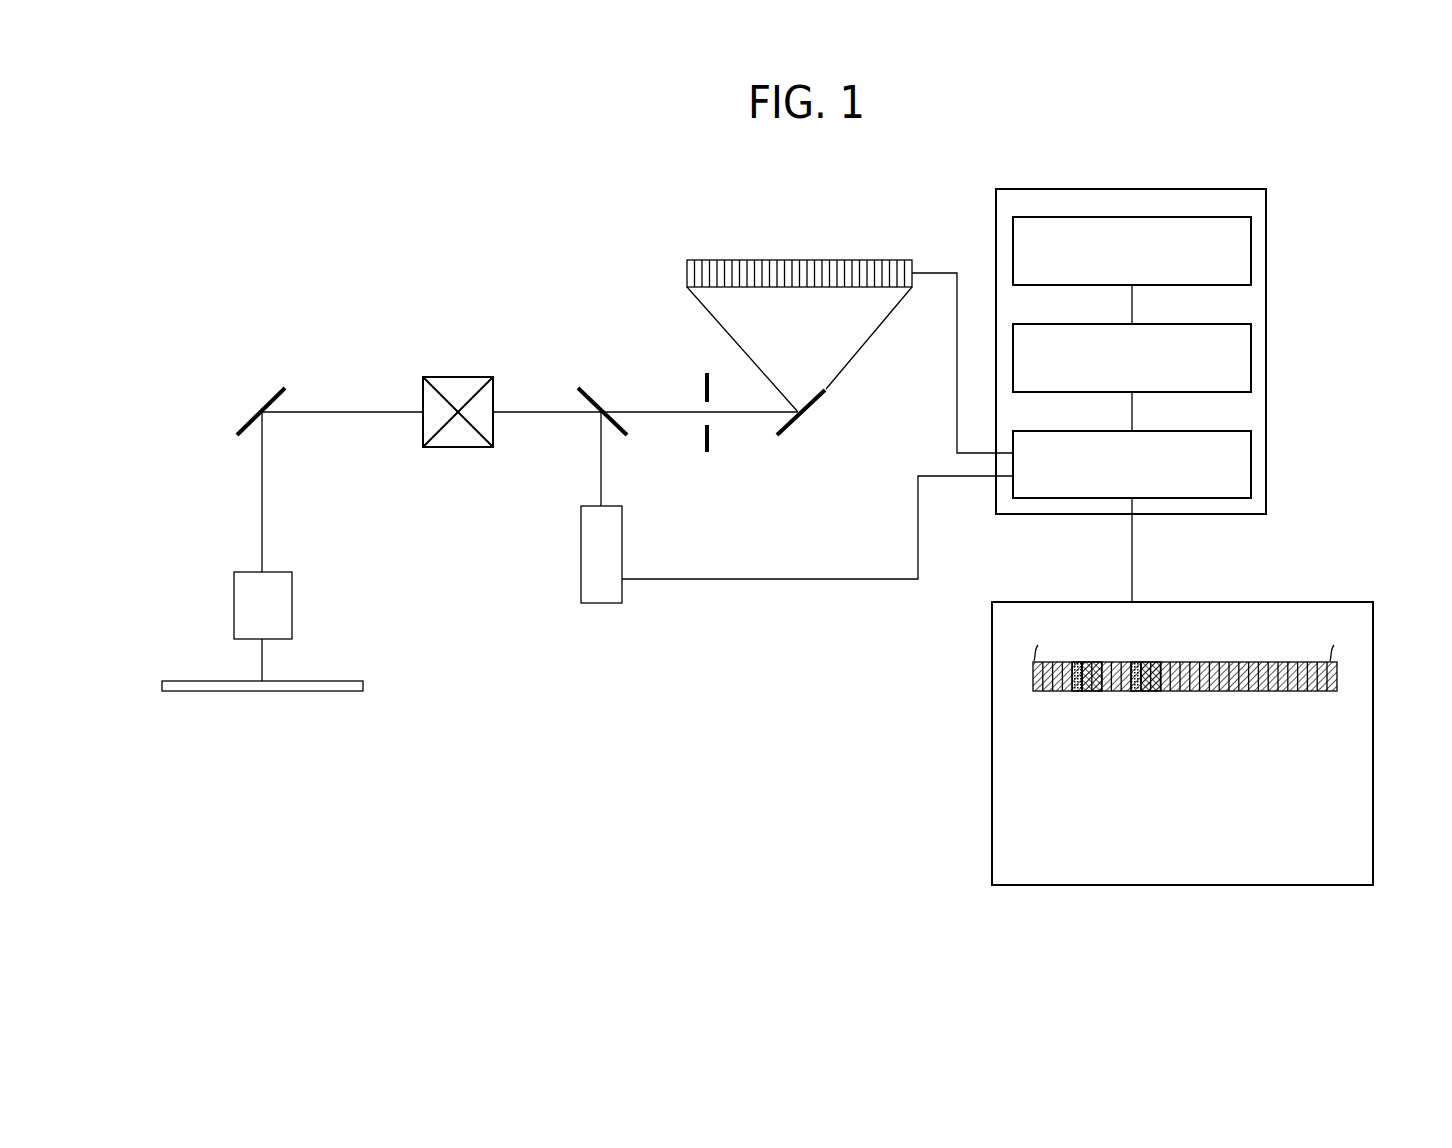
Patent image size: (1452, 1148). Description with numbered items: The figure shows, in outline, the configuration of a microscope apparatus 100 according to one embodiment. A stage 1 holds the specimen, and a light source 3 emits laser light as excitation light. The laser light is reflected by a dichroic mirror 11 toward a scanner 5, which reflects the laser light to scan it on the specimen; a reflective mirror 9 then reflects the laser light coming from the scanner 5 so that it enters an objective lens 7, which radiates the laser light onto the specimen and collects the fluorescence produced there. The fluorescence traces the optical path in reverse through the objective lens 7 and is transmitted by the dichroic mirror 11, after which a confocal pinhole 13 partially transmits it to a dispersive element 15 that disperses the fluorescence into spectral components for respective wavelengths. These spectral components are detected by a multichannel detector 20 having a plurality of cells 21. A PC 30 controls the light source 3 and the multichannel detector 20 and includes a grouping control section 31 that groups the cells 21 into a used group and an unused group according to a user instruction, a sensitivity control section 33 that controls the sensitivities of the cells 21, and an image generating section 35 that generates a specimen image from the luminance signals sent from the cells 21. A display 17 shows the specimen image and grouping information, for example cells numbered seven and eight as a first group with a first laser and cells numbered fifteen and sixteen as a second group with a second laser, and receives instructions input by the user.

The microscope apparatus 100 is at (226, 252).
The stage 1 is at (366, 686).
The light source 3 is at (597, 557).
The scanner 5 is at (458, 377).
The objective lens 7 is at (277, 607).
The reflective mirror 9 is at (240, 421).
The dichroic mirror 11 is at (592, 388).
The confocal pinhole 13 is at (704, 436).
The dispersive element 15 is at (800, 430).
The display 17 is at (1355, 745).
The multichannel detector 20 is at (764, 250).
The cells 21 is at (812, 270).
The PC 30 is at (1057, 178).
The grouping control section 31 is at (1251, 252).
The sensitivity control section 33 is at (1251, 369).
The image generating section 35 is at (1251, 477).